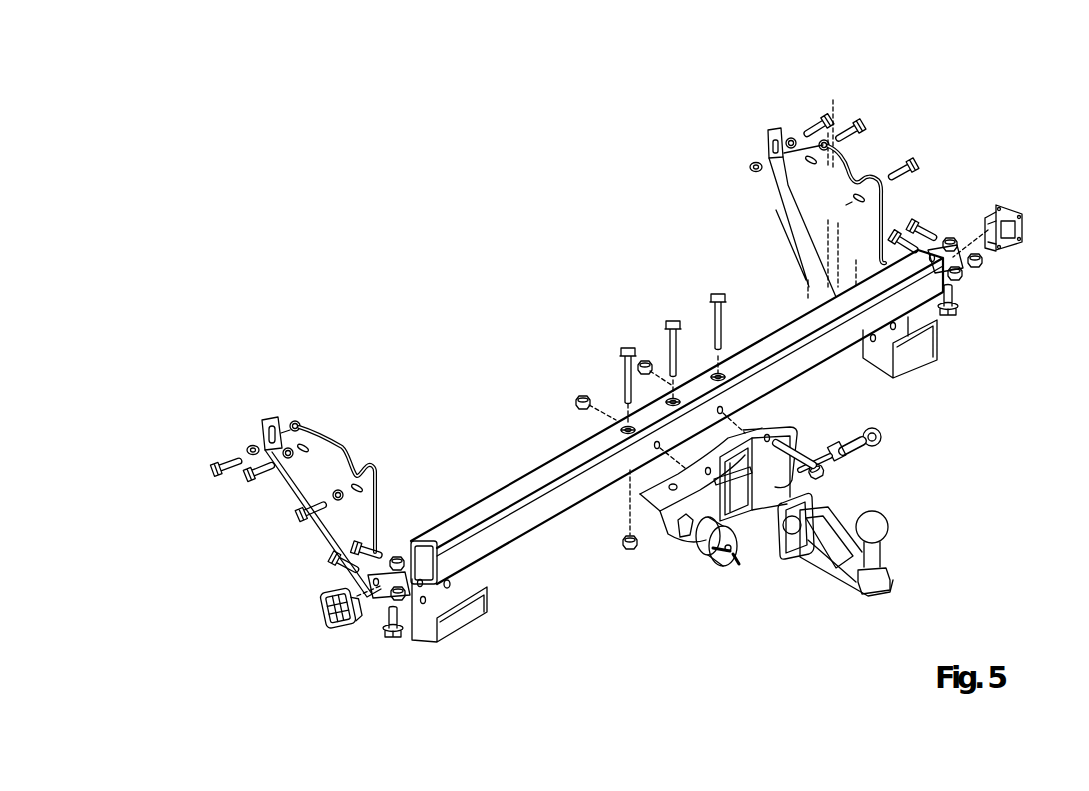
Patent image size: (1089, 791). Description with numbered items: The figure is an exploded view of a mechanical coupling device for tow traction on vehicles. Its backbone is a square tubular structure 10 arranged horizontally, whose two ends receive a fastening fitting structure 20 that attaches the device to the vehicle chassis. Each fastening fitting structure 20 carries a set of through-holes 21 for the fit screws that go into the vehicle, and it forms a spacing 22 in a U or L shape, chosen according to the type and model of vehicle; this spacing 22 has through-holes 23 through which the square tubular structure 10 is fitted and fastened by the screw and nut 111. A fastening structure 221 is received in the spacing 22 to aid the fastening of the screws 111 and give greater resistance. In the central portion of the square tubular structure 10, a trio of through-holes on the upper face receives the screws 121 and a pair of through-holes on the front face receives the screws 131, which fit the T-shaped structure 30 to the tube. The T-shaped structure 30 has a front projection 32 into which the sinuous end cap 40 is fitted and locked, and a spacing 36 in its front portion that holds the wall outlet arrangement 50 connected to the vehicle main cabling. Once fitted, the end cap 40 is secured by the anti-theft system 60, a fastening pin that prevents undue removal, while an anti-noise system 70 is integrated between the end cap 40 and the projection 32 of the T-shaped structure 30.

The square tubular structure 10 is at (487, 497).
The fastening fitting structure 20 is at (292, 494).
The through-holes 21 is at (364, 465).
The spacing 22 is at (463, 612).
The through-holes 23 is at (452, 582).
The T-shaped structure 30 is at (653, 514).
The projection 32 is at (762, 540).
The spacing 36 is at (684, 541).
The end cap 40 is at (890, 583).
The wall outlet arrangement 50 is at (710, 562).
The anti-theft system 60 is at (855, 454).
The anti-noise system 70 is at (812, 499).
The screw and nut 111 is at (336, 563).
The screws 121 is at (716, 293).
The screws 131 is at (800, 461).
The fastening structure 221 is at (383, 594).